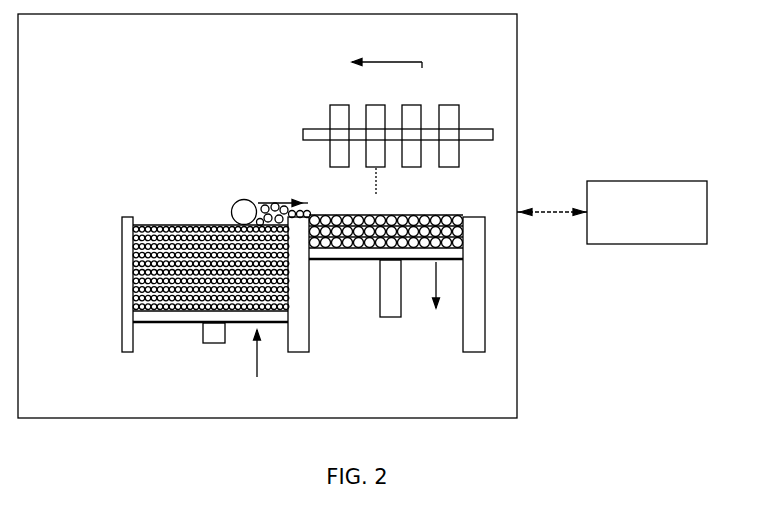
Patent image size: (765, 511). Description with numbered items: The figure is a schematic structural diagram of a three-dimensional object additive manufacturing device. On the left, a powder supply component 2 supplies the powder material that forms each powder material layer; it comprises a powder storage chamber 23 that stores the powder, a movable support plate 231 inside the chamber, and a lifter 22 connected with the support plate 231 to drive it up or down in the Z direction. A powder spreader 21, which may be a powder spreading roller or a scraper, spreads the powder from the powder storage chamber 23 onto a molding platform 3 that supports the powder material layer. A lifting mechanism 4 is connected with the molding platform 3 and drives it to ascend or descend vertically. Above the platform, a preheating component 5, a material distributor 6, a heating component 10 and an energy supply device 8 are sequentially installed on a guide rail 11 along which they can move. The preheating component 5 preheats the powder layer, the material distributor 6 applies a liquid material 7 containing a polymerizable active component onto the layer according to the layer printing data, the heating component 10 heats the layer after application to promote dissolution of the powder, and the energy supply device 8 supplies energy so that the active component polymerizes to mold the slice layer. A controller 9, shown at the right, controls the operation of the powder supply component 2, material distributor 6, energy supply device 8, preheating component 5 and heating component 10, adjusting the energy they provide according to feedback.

The powder supply component 2 is at (184, 208).
The powder storage chamber 23 is at (122, 266).
The support plate 231 is at (182, 323).
The lifter 22 is at (218, 343).
The controller 9 is at (204, 225).
The powder spreader 21 is at (243, 198).
The guide rail 11 is at (303, 131).
The preheating component 5 is at (334, 105).
The material distributor 6 is at (373, 105).
The heating component 10 is at (410, 105).
The energy supply device 8 is at (455, 105).
The liquid material 7 is at (380, 186).
The molding platform 3 is at (350, 262).
The lifting mechanism 4 is at (402, 303).